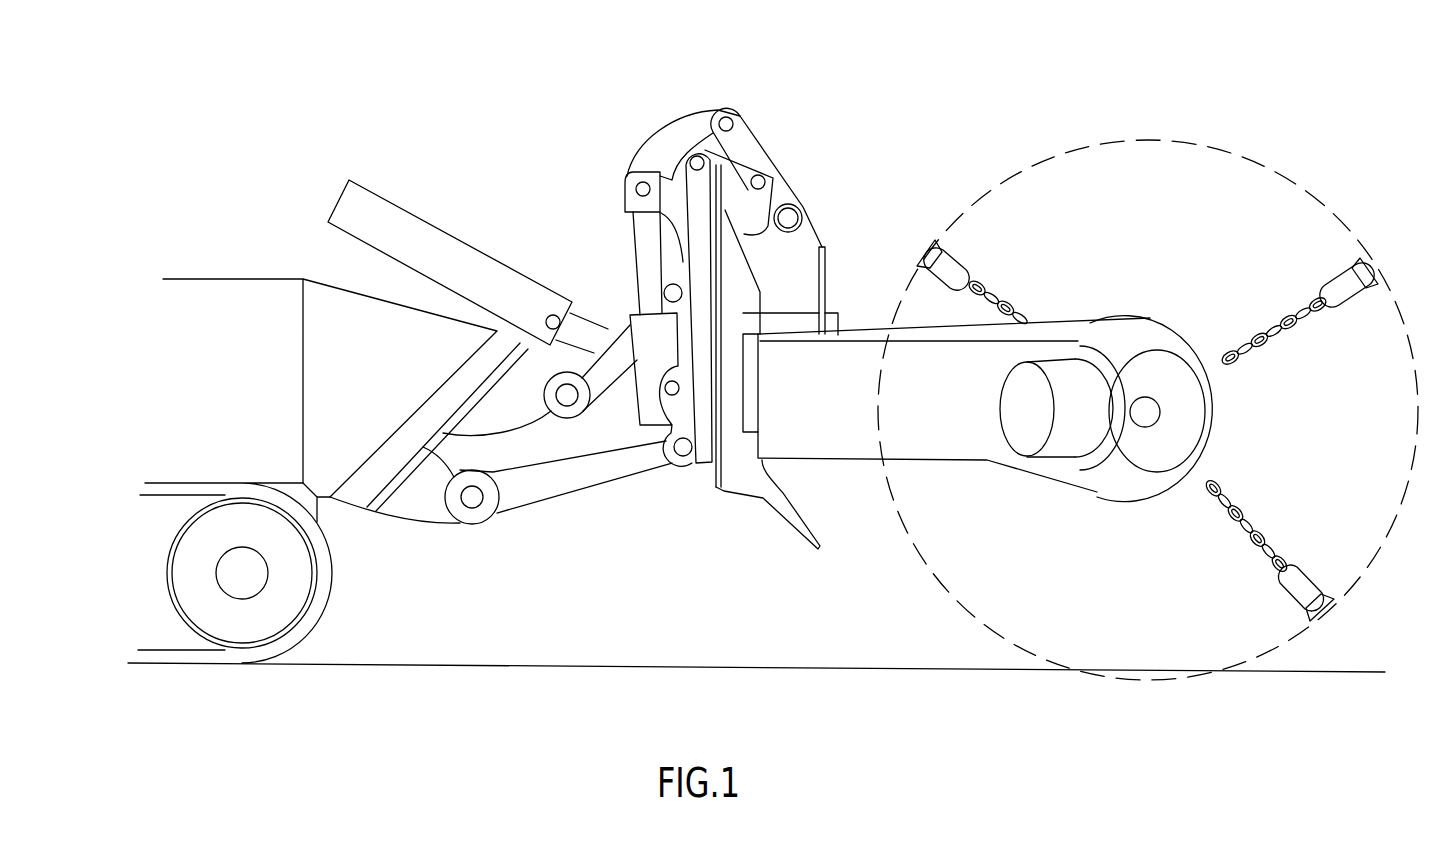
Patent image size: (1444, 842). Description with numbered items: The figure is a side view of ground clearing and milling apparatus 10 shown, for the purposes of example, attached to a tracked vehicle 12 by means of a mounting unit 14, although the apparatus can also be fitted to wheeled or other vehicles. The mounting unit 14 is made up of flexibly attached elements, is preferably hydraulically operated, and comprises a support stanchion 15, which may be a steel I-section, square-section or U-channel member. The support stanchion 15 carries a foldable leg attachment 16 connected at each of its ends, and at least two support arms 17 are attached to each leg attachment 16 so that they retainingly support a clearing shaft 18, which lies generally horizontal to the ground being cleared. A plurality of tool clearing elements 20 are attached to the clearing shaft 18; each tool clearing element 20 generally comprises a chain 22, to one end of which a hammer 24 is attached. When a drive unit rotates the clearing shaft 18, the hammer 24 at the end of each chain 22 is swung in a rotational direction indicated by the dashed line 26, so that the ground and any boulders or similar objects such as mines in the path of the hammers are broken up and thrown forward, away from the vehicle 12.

The ground clearing and milling apparatus 10 is at (770, 119).
The tracked vehicle 12 is at (215, 287).
The mounting unit 14 is at (655, 150).
The support stanchion 15 is at (793, 240).
The foldable leg attachment 16 is at (838, 322).
The support arm 17 is at (923, 453).
The clearing shaft 18 is at (1235, 398).
The tool clearing element 20 is at (1243, 332).
The chain 22 is at (995, 290).
The hammer 24 is at (1335, 610).
The rotational direction 26 is at (1100, 140).